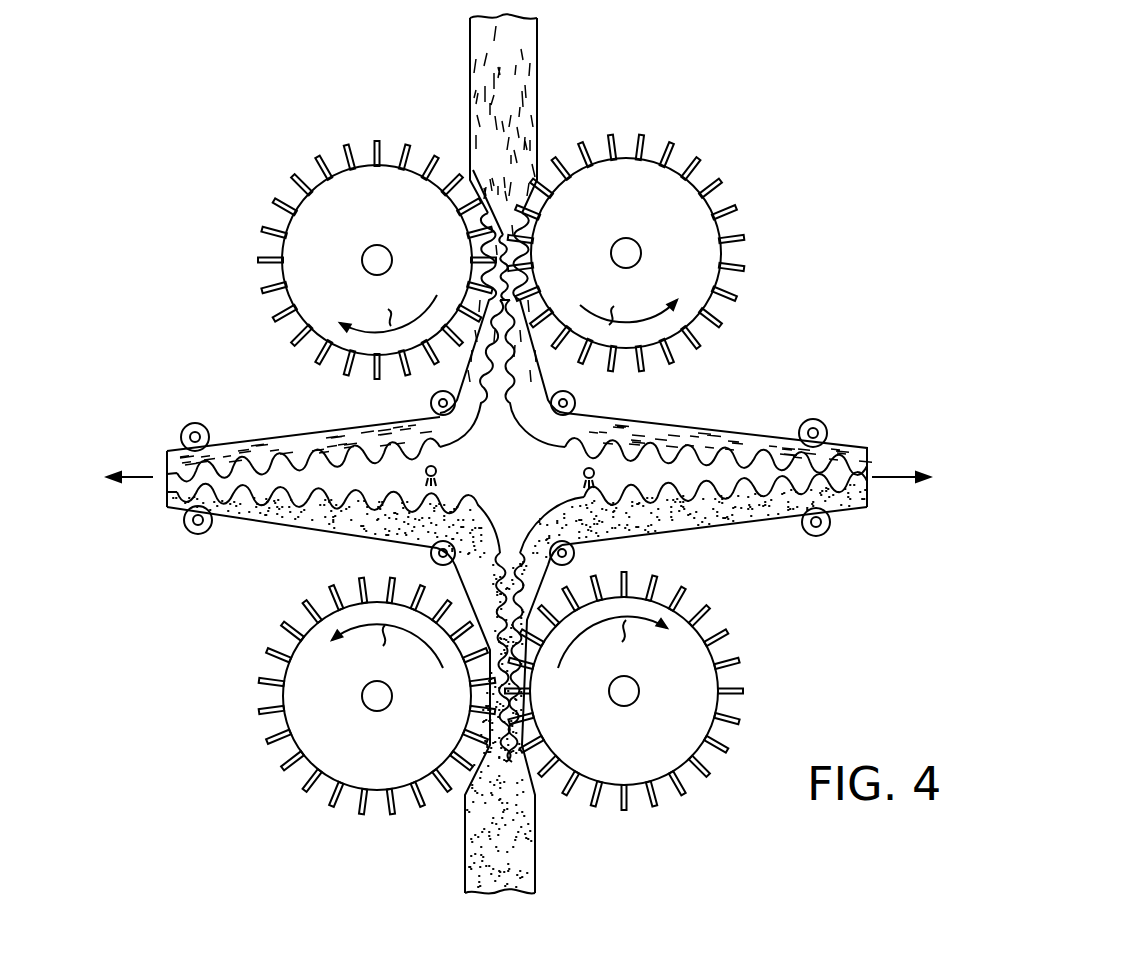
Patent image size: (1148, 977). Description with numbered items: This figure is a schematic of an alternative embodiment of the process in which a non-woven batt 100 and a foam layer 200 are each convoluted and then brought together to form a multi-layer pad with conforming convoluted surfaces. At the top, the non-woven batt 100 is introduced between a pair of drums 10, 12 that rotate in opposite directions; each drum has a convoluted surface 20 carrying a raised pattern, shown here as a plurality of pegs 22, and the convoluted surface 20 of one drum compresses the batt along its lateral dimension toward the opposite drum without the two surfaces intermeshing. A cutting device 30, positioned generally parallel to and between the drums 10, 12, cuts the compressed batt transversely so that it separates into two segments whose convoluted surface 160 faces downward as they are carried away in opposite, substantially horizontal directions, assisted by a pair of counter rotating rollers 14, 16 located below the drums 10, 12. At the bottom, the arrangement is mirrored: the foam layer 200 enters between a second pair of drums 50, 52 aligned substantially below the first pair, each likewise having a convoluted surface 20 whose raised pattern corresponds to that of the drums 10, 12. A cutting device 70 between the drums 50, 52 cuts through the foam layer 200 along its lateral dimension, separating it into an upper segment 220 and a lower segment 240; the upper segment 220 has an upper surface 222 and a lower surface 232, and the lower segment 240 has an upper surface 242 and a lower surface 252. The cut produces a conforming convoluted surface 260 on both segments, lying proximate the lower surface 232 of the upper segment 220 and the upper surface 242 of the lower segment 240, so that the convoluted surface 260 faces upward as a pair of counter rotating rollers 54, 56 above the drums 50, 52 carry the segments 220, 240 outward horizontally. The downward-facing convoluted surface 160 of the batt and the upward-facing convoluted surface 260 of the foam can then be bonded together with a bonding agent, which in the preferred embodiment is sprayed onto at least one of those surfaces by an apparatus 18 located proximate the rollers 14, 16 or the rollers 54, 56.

The drum 10 is at (384, 210).
The drum 12 is at (642, 210).
The counter rotating roller 14 is at (431, 403).
The counter rotating roller 16 is at (575, 403).
The apparatus 18 is at (437, 470).
The convoluted surface 20 is at (502, 474).
The pegs 22 is at (318, 152).
The cutting device 30 is at (473, 170).
The drum 50 is at (392, 762).
The drum 52 is at (640, 761).
The counter rotating roller 54 is at (431, 553).
The counter rotating roller 56 is at (574, 553).
The cutting device 70 is at (518, 757).
The non-woven batt 100 is at (540, 42).
The convoluted surface 160 is at (263, 470).
The foam layer 200 is at (467, 893).
The upper segment 220 is at (393, 540).
The upper surface 222 is at (317, 520).
The lower surface 232 is at (293, 500).
The lower segment 240 is at (640, 540).
The upper surface 242 is at (770, 497).
The lower surface 252 is at (693, 527).
The convoluted surface 260 is at (252, 495).